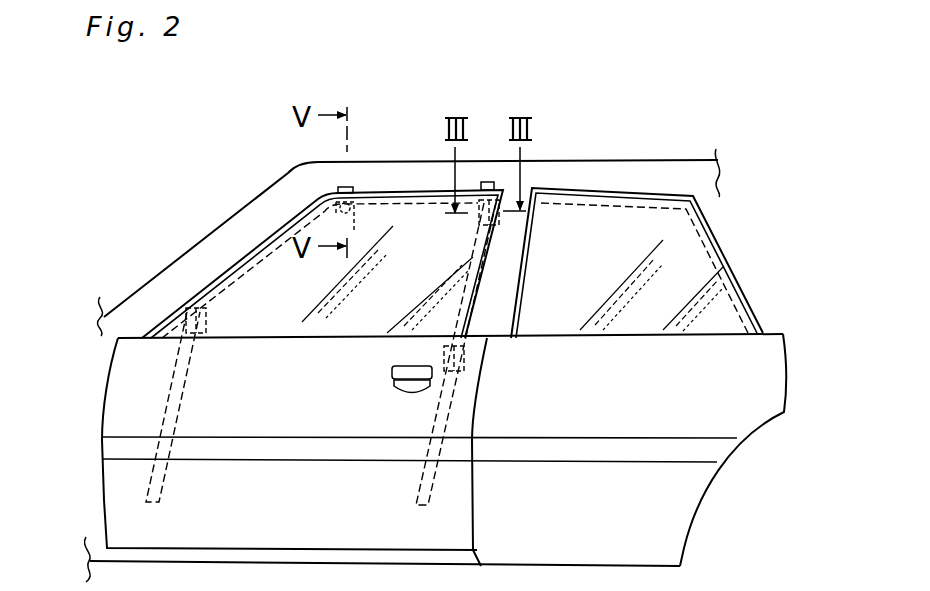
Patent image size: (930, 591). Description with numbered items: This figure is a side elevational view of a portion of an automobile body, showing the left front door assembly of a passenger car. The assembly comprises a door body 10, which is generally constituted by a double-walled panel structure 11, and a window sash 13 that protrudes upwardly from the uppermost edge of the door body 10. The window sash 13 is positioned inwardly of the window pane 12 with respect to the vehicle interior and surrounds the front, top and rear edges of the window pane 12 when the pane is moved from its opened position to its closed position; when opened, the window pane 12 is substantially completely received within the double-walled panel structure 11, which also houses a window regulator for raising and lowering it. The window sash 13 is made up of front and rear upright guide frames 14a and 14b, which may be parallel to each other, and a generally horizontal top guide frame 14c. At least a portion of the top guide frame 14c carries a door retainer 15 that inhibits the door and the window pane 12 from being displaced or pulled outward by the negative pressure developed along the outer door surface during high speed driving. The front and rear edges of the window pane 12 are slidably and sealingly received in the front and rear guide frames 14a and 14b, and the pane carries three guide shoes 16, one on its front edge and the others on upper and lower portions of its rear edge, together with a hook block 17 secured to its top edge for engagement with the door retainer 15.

The door body 10 is at (350, 466).
The double-walled panel structure 11 is at (492, 508).
The window pane 12 is at (379, 319).
The window sash 13 is at (418, 191).
The front upright guide frame 14a is at (173, 375).
The rear upright guide frame 14b is at (482, 263).
The top guide frame 14c is at (379, 192).
The door retainer 15 is at (328, 183).
The guide shoes 16 is at (207, 316).
The hook block 17 is at (330, 207).